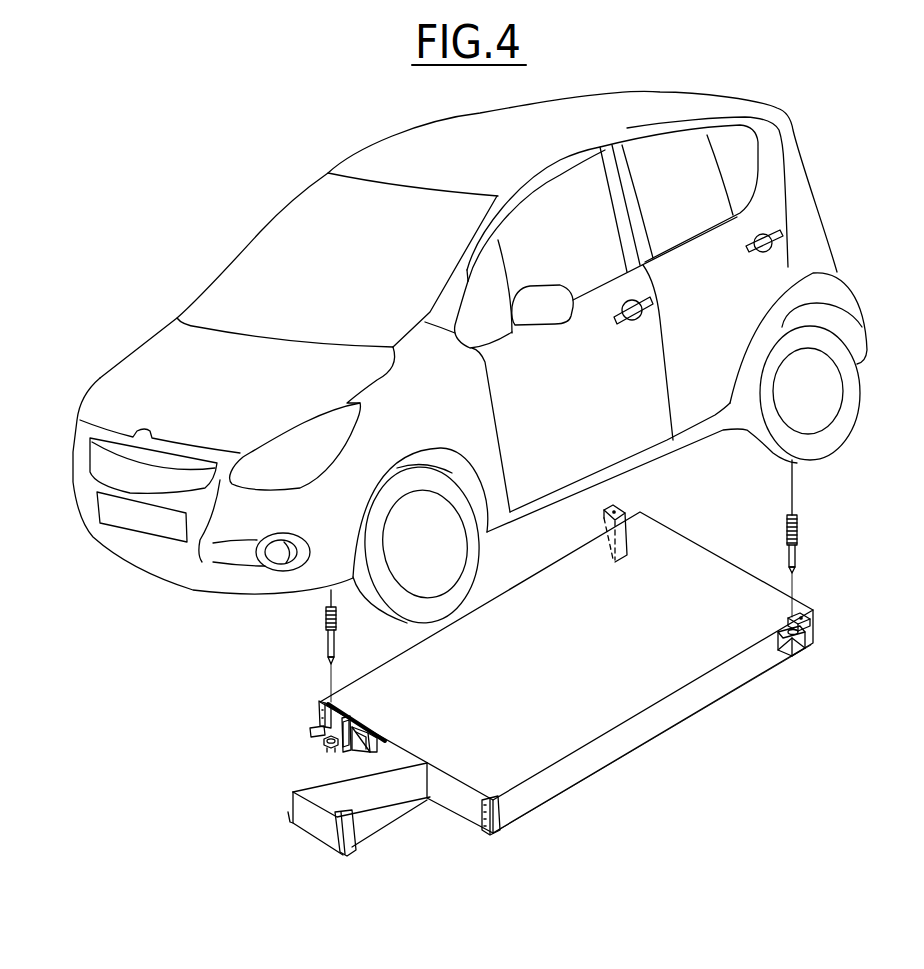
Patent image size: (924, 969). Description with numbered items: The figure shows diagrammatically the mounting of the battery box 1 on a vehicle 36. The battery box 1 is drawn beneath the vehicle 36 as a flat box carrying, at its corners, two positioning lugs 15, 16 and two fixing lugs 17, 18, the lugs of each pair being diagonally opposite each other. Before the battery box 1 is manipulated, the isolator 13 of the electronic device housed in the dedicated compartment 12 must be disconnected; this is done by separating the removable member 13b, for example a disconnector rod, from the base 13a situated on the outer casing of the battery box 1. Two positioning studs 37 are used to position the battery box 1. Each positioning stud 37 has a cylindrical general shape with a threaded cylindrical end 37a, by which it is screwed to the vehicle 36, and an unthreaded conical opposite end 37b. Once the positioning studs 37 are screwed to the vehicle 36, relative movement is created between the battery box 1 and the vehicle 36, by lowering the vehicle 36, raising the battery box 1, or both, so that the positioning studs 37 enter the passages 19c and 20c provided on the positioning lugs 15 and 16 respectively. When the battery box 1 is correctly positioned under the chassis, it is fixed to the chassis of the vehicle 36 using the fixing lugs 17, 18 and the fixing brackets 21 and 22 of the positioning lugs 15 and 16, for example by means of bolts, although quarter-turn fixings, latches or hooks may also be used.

The vehicle 36 is at (799, 119).
The battery box 1 is at (645, 757).
The dedicated compartment 12 is at (312, 822).
The isolator 13 is at (343, 755).
The base 13a is at (360, 722).
The removable member 13b is at (377, 736).
The positioning lug 15 is at (828, 626).
The positioning lug 16 is at (288, 714).
The fixing lug 17 is at (473, 833).
The fixing lug 18 is at (625, 507).
The passage 19c is at (814, 633).
The passage 20c is at (322, 739).
The fixing bracket 21 is at (800, 608).
The fixing bracket 22 is at (320, 705).
The positioning stud 37 is at (323, 637).
The threaded cylindrical end 37a is at (323, 616).
The unthreaded conical end 37b is at (323, 660).